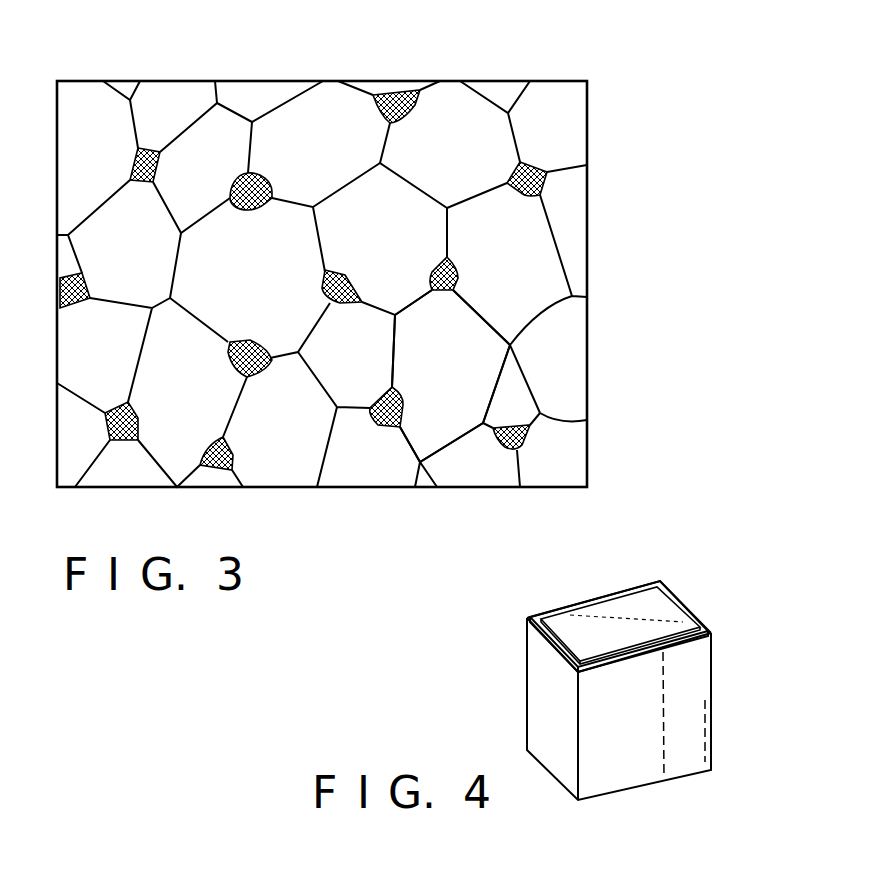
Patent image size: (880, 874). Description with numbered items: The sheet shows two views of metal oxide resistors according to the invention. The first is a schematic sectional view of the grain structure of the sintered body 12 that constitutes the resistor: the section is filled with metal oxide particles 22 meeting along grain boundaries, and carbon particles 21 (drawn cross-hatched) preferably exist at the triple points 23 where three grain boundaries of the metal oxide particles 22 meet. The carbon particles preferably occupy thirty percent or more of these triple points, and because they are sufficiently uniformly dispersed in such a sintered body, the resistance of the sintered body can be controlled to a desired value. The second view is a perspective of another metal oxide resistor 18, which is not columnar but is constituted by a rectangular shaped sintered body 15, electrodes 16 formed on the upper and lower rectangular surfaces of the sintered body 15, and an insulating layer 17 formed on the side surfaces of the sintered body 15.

In FIG. 3, the sintered body 12 is at (282, 78).
In FIG. 3, the carbon particles 21 is at (537, 165).
In FIG. 3, the metal oxide particles 22 is at (467, 377).
In FIG. 3, the triple points 23 is at (452, 212).
In FIG. 4, the sintered body 15 is at (708, 632).
In FIG. 4, the electrodes 16 is at (673, 615).
In FIG. 4, the insulating layer 17 is at (713, 705).
In FIG. 4, the metal oxide resistor 18 is at (579, 594).